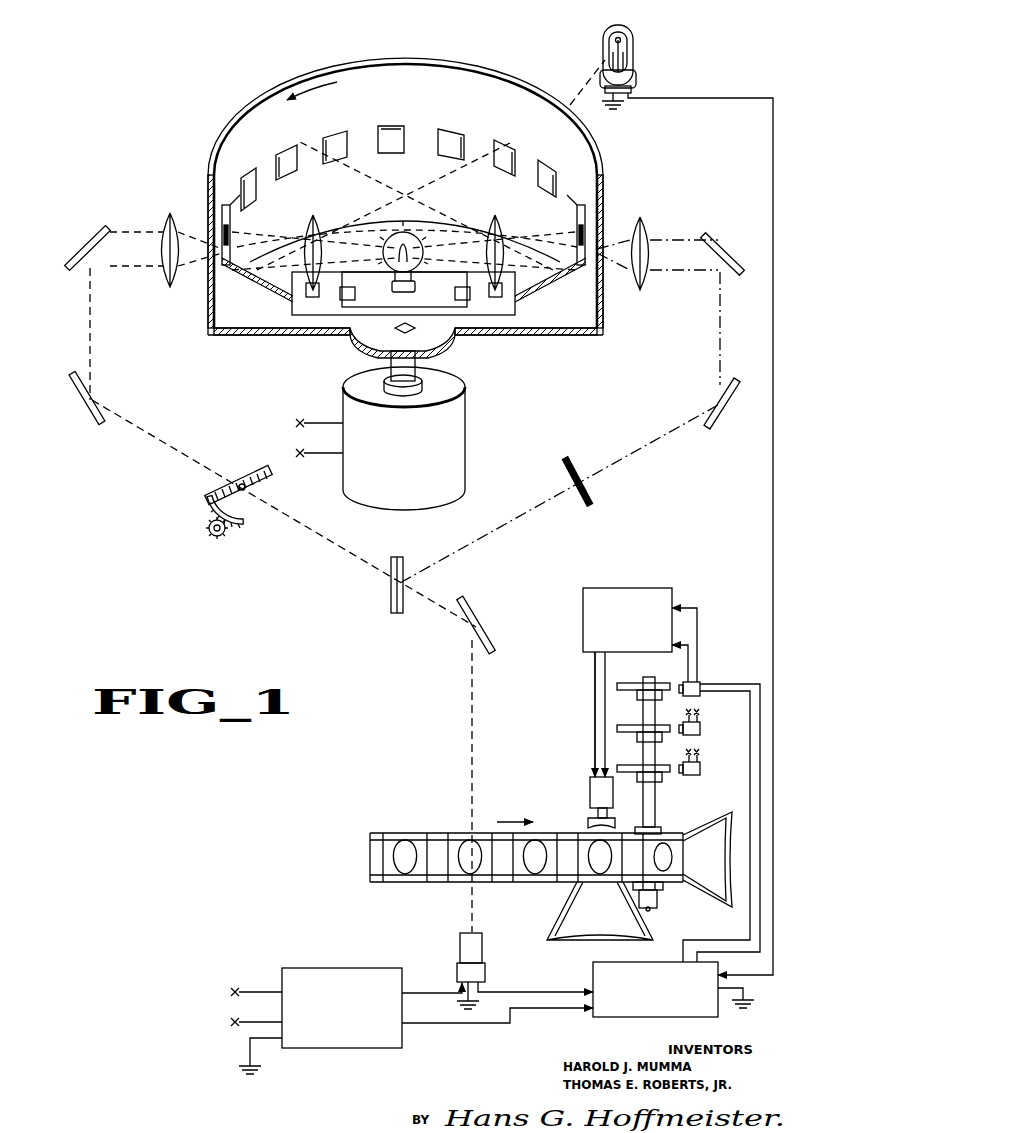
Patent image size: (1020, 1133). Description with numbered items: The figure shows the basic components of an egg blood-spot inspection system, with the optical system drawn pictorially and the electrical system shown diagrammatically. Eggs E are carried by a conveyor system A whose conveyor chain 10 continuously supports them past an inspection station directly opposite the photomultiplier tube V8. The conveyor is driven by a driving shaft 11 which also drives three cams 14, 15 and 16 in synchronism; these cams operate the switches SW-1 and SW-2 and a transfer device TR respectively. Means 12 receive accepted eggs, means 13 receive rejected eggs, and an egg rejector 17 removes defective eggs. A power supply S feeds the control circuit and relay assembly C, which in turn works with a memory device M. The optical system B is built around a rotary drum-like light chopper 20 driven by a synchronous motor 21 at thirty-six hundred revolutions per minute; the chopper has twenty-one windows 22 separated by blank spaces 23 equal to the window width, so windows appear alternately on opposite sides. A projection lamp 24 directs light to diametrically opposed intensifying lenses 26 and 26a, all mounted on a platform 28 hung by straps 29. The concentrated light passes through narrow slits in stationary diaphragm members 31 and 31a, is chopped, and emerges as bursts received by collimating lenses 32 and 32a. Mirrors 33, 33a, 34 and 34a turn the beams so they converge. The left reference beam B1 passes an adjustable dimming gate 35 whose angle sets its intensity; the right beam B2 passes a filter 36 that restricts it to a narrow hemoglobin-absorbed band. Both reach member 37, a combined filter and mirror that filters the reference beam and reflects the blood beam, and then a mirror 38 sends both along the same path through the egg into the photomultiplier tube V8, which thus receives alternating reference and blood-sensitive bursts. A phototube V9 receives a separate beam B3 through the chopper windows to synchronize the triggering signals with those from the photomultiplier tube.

The light chopper 20 is at (407, 58).
The optical system B is at (228, 108).
The openings or windows 22 is at (397, 126).
The spacing between openings 23 is at (480, 153).
The projection lamp 24 is at (403, 232).
The intensifying lens 26 is at (314, 216).
The intensifying lens 26a is at (494, 216).
The platform 28 is at (292, 300).
The straps 29 is at (458, 296).
The stationary diaphragm member 31 is at (232, 222).
The stationary diaphragm member 31a is at (577, 222).
The collimating lens 32 is at (166, 218).
The collimating lens 32a is at (646, 226).
The mirror 33 is at (80, 235).
The mirror 33a is at (728, 242).
The mirror 34 is at (82, 410).
The mirror 34a is at (718, 424).
The adjustable dimming gate 35 is at (252, 470).
The filter 36 is at (590, 485).
The combined filter and mirror 37 is at (391, 596).
The mirror 38 is at (488, 620).
The synchronous motor 21 is at (415, 466).
The reference beam B1 is at (88, 322).
The blood detection beam B2 is at (718, 335).
The light beam to photocell B3 is at (575, 87).
The phototube or photocell V9 is at (633, 55).
The photomultiplier tube V8 is at (460, 950).
The memory device M is at (634, 587).
The transfer device TR is at (702, 683).
The switch SW-1 is at (700, 768).
The switch SW-2 is at (700, 728).
The driving shaft 11 is at (645, 800).
The cam 14 is at (632, 766).
The cam 15 is at (632, 726).
The cam 16 is at (637, 685).
The egg rejector 17 is at (590, 783).
The conveyor chain 10 is at (440, 883).
The conveyor system A is at (369, 851).
The eggs E is at (467, 850).
The means for receiving accepted eggs 12 is at (722, 835).
The means for receiving rejected eggs 13 is at (568, 920).
The control circuit and relay assembly C is at (610, 1019).
The power supply S is at (365, 1050).